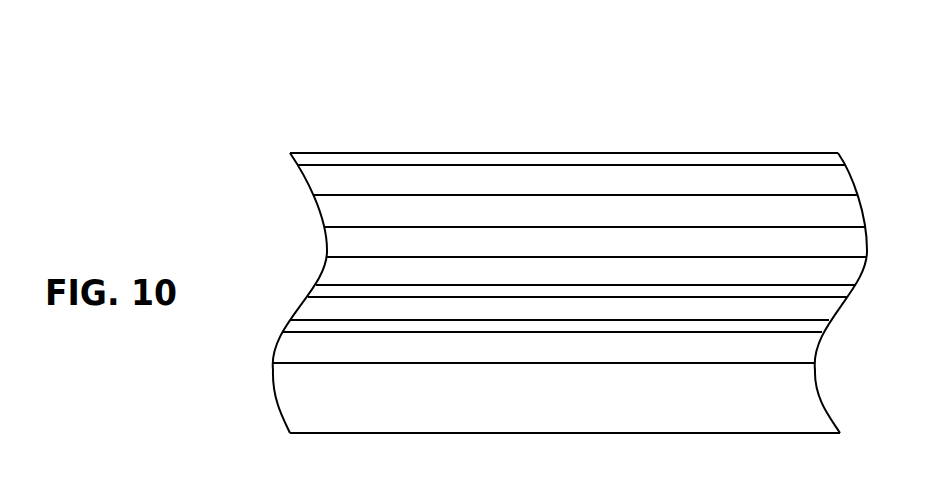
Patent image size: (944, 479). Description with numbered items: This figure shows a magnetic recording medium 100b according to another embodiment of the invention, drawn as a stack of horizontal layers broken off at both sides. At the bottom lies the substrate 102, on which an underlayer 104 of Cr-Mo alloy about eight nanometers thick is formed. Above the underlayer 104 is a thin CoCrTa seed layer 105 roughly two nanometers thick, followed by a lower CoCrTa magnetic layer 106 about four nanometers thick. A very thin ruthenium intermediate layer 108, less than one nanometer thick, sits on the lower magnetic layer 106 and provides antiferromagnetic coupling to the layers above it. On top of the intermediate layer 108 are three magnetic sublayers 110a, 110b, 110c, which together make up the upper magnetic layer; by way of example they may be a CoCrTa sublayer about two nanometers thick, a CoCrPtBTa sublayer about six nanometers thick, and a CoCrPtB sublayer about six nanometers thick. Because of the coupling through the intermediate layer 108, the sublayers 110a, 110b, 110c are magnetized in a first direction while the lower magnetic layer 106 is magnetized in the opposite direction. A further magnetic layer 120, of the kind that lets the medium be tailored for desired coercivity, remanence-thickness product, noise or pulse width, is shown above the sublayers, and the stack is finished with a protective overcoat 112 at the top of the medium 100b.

The medium 100b is at (706, 105).
The substrate 102 is at (710, 405).
The underlayer 104 is at (393, 348).
The seed layer 105 is at (458, 327).
The magnetic layer 106 is at (544, 308).
The intermediate layer 108 is at (608, 290).
The magnetic sublayer 110a is at (367, 272).
The magnetic sublayer 110b is at (427, 240).
The magnetic sublayer 110c is at (497, 208).
The protective overcoat 112 is at (627, 157).
The magnetic layer 120 is at (558, 180).